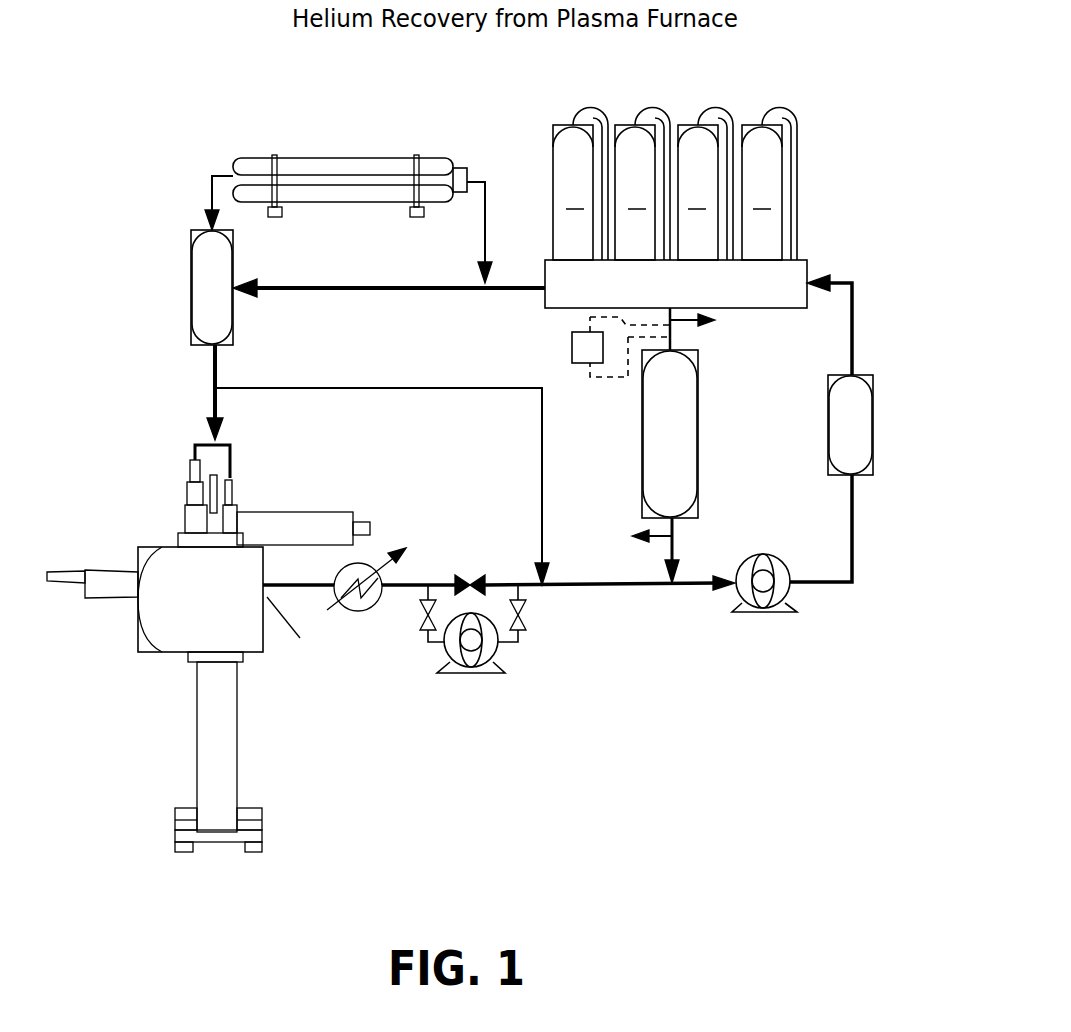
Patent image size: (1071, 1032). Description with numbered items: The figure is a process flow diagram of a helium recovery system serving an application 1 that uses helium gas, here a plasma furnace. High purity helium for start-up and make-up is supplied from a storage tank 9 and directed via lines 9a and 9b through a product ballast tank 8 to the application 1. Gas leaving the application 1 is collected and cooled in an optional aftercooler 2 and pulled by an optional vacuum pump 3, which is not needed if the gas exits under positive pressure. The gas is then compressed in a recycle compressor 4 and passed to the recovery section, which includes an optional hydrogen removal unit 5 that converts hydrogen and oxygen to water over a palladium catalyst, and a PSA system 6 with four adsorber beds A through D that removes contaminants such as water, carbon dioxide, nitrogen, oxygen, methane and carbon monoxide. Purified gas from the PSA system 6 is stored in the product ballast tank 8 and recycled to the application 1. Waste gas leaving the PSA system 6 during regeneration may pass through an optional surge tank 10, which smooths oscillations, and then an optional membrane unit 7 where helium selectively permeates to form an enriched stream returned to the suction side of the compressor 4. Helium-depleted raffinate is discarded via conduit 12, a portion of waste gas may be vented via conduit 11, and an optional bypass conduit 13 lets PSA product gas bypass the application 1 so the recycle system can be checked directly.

The application 1 is at (197, 766).
The aftercooler 2 is at (342, 612).
The vacuum pump 3 is at (492, 678).
The recycle compressor 4 is at (787, 616).
The hydrogen removal unit 5 is at (886, 437).
The PSA system 6 is at (770, 225).
The membrane unit 7 is at (698, 468).
The product ballast tank 8 is at (190, 277).
The storage tank 9 is at (312, 158).
The line 9a is at (486, 258).
The line 9b is at (211, 178).
The surge tank 10 is at (572, 348).
The conduit 11 is at (672, 330).
The conduit 12 is at (660, 536).
The conduit 13 is at (393, 390).